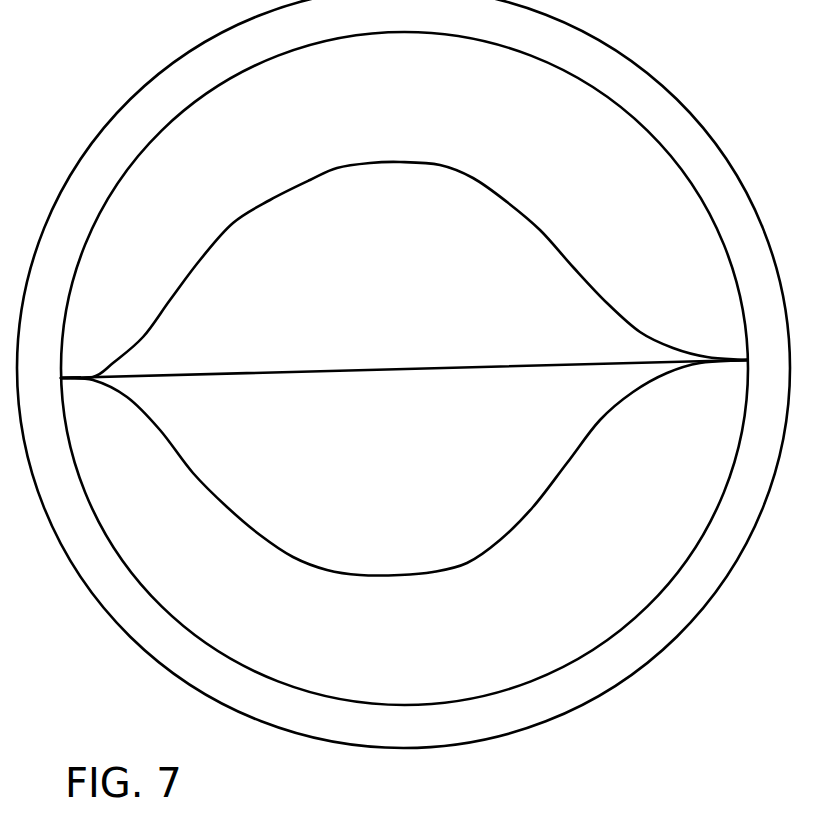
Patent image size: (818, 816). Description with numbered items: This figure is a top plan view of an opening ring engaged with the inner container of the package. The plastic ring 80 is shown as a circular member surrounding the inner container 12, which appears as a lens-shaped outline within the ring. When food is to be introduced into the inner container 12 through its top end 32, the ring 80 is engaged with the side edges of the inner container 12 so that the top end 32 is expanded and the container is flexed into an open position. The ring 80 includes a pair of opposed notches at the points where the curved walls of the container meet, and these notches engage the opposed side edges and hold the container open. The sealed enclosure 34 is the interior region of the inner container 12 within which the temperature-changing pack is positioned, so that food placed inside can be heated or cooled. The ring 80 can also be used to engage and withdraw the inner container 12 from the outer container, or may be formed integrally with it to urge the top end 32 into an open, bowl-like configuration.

The plastic ring 80 is at (143, 116).
The inner container 12 is at (404, 328).
The top end 32 is at (268, 202).
The enclosure 34 is at (371, 297).